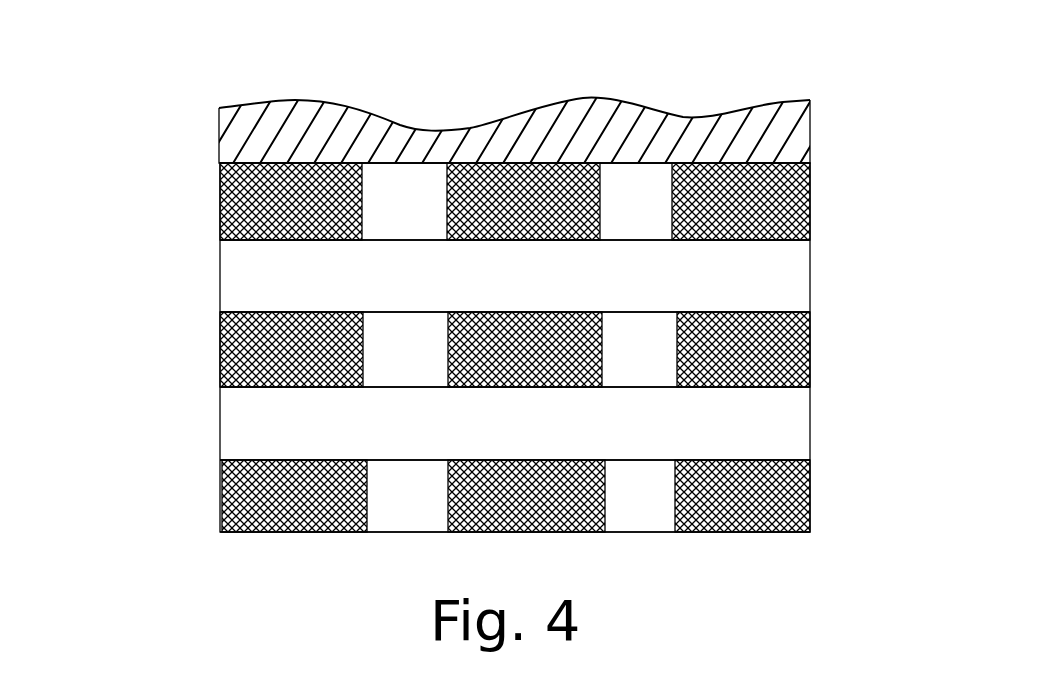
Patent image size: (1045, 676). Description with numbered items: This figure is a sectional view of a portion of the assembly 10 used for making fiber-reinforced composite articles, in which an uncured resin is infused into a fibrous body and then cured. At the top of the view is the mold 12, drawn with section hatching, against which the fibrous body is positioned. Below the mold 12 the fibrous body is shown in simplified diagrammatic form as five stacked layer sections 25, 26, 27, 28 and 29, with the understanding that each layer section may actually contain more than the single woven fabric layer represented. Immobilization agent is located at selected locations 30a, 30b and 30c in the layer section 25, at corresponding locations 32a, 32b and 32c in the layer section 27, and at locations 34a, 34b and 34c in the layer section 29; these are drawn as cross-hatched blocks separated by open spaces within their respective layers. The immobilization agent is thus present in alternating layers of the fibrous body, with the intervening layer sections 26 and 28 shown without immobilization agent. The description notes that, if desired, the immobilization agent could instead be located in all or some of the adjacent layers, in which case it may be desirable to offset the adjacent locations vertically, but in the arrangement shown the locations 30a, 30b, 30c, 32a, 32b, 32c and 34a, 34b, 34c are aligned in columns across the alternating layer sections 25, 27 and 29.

The assembly 10 is at (118, 272).
The mold 12 is at (810, 104).
The layer section 25 is at (812, 490).
The layer section 26 is at (812, 426).
The layer section 27 is at (812, 342).
The layer section 28 is at (812, 272).
The layer section 29 is at (812, 201).
The immobilization agent location 30a is at (290, 520).
The immobilization agent location 30b is at (532, 516).
The immobilization agent location 30c is at (728, 520).
The immobilization agent location 32a is at (278, 370).
The immobilization agent location 32b is at (510, 368).
The immobilization agent location 32c is at (726, 362).
The immobilization agent location 34a is at (289, 226).
The immobilization agent location 34b is at (498, 222).
The immobilization agent location 34c is at (718, 215).